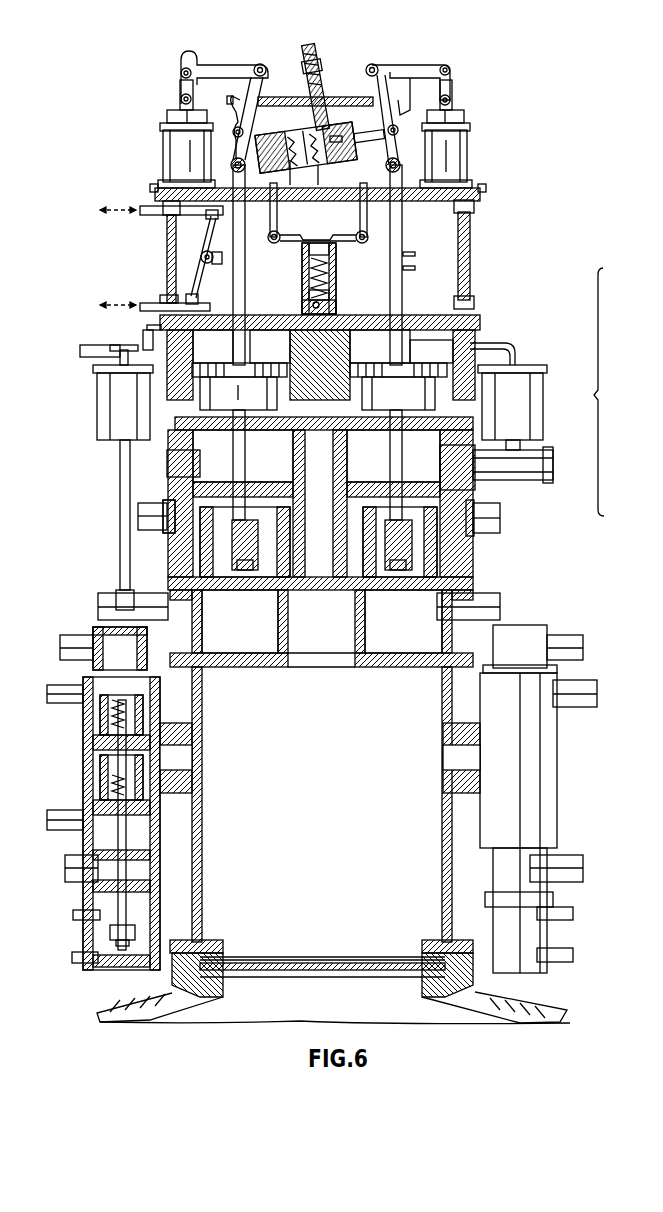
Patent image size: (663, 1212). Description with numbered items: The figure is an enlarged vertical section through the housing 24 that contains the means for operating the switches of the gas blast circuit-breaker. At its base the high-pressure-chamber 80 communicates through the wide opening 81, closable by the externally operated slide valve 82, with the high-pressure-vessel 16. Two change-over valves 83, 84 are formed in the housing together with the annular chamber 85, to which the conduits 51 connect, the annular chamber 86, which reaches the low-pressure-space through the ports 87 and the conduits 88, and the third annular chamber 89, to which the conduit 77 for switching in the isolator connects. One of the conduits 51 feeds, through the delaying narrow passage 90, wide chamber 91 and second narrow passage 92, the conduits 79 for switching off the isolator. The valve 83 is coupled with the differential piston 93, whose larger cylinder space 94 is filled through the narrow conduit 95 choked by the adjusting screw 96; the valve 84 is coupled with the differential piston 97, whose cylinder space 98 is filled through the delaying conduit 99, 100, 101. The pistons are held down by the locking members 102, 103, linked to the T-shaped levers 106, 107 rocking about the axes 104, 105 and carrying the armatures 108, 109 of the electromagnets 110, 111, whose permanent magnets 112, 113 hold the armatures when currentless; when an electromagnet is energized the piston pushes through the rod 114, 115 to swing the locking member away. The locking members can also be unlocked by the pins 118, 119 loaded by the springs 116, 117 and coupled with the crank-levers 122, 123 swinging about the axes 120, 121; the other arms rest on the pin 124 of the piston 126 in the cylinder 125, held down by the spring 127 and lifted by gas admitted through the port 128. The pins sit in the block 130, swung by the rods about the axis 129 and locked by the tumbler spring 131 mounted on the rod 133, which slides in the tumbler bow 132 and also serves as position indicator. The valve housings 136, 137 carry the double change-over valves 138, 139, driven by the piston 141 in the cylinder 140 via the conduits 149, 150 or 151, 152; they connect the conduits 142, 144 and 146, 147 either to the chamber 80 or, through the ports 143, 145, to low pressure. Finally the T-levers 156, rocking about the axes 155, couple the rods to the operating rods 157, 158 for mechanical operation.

The high-pressure-vessel 16 is at (540, 1010).
The housing 24 is at (613, 392).
The conduits 51 is at (112, 596).
The conduit 77 is at (530, 470).
The conduits 79 is at (90, 345).
The high-pressure-chamber 80 is at (322, 804).
The wide opening 81 is at (378, 972).
The slide valve 82 is at (300, 972).
The change-over valve 83 is at (206, 538).
The change-over valve 84 is at (445, 530).
The annular chamber 85 is at (321, 621).
The annular chamber 86 is at (448, 498).
The ports 87 is at (175, 525).
The conduits 88 is at (152, 506).
The annular chamber 89 is at (393, 456).
The narrow passage 90 is at (120, 515).
The wide chamber 91 is at (110, 405).
The narrow passage 92 is at (118, 362).
The differential piston 93 is at (270, 346).
The cylinder space 94 is at (190, 345).
The narrow conduit 95 is at (184, 352).
The adjusting screw 96 is at (143, 335).
The differential piston 97 is at (398, 370).
The cylinder space 98 is at (450, 345).
The conduit 99 is at (520, 445).
The conduit 100 is at (530, 395).
The conduit 101 is at (512, 356).
The locking member 102 is at (230, 156).
The locking member 103 is at (402, 163).
The axis 104 is at (255, 66).
The axis 105 is at (372, 64).
The T-shaped lever 106 is at (212, 66).
The T-shaped lever 107 is at (402, 64).
The armature 108 is at (180, 108).
The armature 109 is at (452, 95).
The electromagnet 110 is at (187, 146).
The electromagnet 111 is at (455, 147).
The permanent magnet 112 is at (170, 118).
The permanent magnet 113 is at (465, 118).
The rod 114 is at (240, 298).
The rod 115 is at (402, 292).
The spring 116 is at (248, 122).
The spring 117 is at (330, 145).
The pin 118 is at (288, 166).
The pin 119 is at (372, 143).
The axis 120 is at (280, 244).
The axis 121 is at (372, 240).
The crank-lever 122 is at (270, 243).
The crank-lever 123 is at (366, 233).
The pin 124 is at (333, 258).
The cylinder 125 is at (336, 291).
The piston 126 is at (308, 302).
The spring 127 is at (326, 275).
The port 128 is at (334, 302).
The axis 129 is at (318, 168).
The block 130 is at (300, 158).
The tumbler spring 131 is at (285, 96).
The thread 132 is at (322, 62).
The rod 133 is at (312, 58).
The valve housing 136 is at (96, 742).
The valve housing 137 is at (515, 752).
The change-over valve 138 is at (95, 800).
The change-over valve 139 is at (100, 718).
The cylinder 140 is at (150, 918).
The piston 141 is at (110, 933).
The conduit 142 is at (97, 856).
The ports 143 is at (63, 807).
The conduit 144 is at (72, 635).
The ports 145 is at (61, 681).
The conduit 146 is at (570, 862).
The conduit 147 is at (570, 640).
The conduit 149 is at (86, 963).
The conduit 150 is at (80, 910).
The operating conduit 151 is at (573, 955).
The operating conduit 152 is at (573, 912).
The axis 155 is at (200, 258).
The T-lever 156 is at (205, 222).
The operating rod 157 is at (160, 306).
The operating rod 158 is at (160, 208).